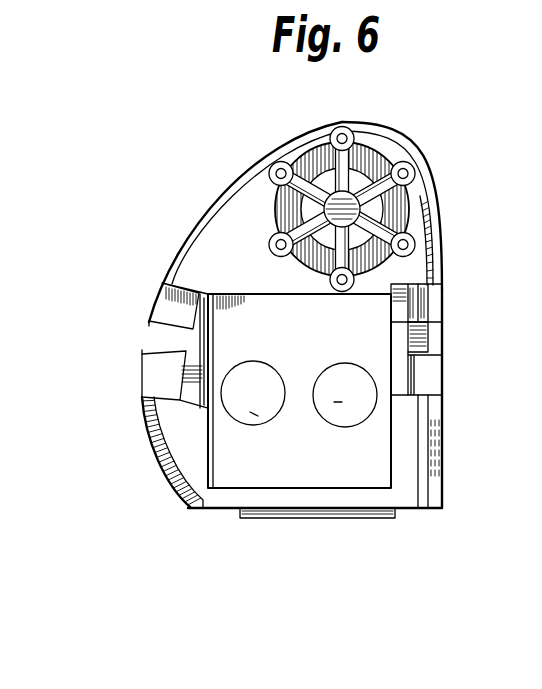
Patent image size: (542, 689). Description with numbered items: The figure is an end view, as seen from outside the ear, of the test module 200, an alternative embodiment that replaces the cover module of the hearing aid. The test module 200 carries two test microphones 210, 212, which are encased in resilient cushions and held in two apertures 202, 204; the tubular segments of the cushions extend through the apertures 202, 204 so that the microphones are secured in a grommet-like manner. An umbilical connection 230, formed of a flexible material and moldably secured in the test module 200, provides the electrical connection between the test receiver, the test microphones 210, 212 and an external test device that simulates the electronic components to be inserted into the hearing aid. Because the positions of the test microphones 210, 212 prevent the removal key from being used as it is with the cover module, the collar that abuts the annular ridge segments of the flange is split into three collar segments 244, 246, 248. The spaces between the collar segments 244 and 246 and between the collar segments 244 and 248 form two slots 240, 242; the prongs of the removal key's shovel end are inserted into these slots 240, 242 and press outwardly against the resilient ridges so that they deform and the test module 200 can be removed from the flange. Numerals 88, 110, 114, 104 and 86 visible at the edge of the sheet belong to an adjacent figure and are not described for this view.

The test module 200 is at (204, 203).
The aperture 202 is at (226, 411).
The aperture 204 is at (375, 405).
The test microphone 210 is at (256, 414).
The test microphone 212 is at (338, 402).
The umbilical connection 230 is at (412, 206).
The slot 240 is at (149, 343).
The slot 242 is at (434, 340).
The collar segment 244 is at (342, 121).
The collar segment 246 is at (170, 473).
The collar segment 248 is at (442, 488).
The element of adjacent figure 88 is at (534, 416).
The element of adjacent figure 110 is at (541, 461).
The element of adjacent figure 114 is at (541, 555).
The element of adjacent figure 104 is at (541, 590).
The element of adjacent figure 86 is at (529, 641).